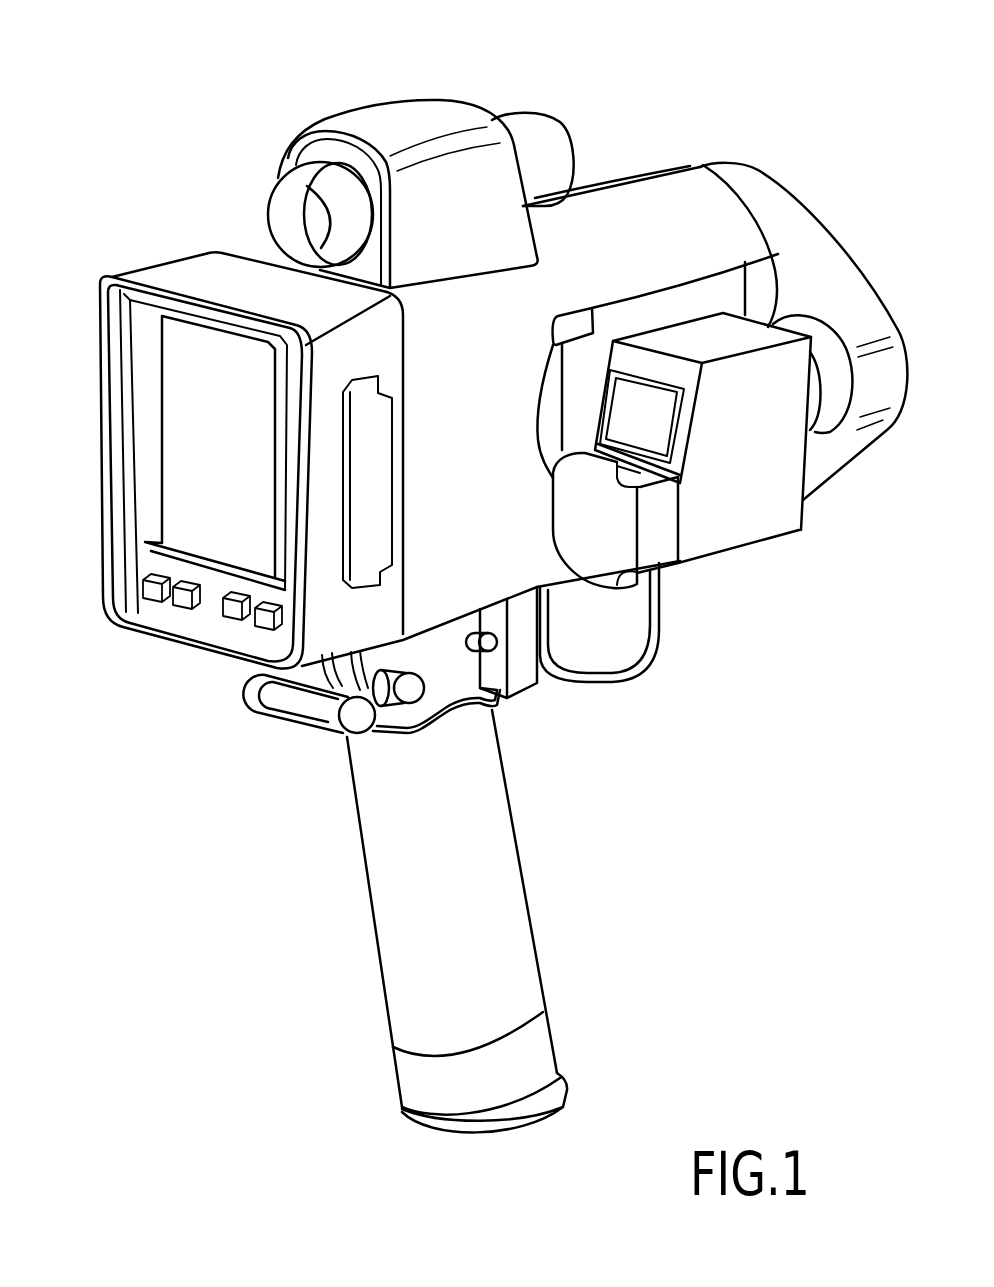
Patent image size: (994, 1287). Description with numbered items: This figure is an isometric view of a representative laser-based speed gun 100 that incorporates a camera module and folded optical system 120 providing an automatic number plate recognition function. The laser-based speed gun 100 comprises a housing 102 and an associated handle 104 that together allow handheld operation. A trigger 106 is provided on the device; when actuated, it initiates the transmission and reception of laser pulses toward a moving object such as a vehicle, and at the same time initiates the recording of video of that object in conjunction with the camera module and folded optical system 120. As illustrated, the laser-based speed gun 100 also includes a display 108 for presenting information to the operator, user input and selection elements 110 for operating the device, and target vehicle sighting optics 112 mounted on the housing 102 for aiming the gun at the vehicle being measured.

The laser-based speed gun 100 is at (473, 589).
The housing 102 is at (773, 174).
The handle 104 is at (360, 837).
The trigger 106 is at (547, 640).
The display 108 is at (173, 450).
The user input and selection elements 110 is at (150, 587).
The target vehicle sighting optics 112 is at (468, 106).
The camera module and folded optical system 120 is at (800, 423).